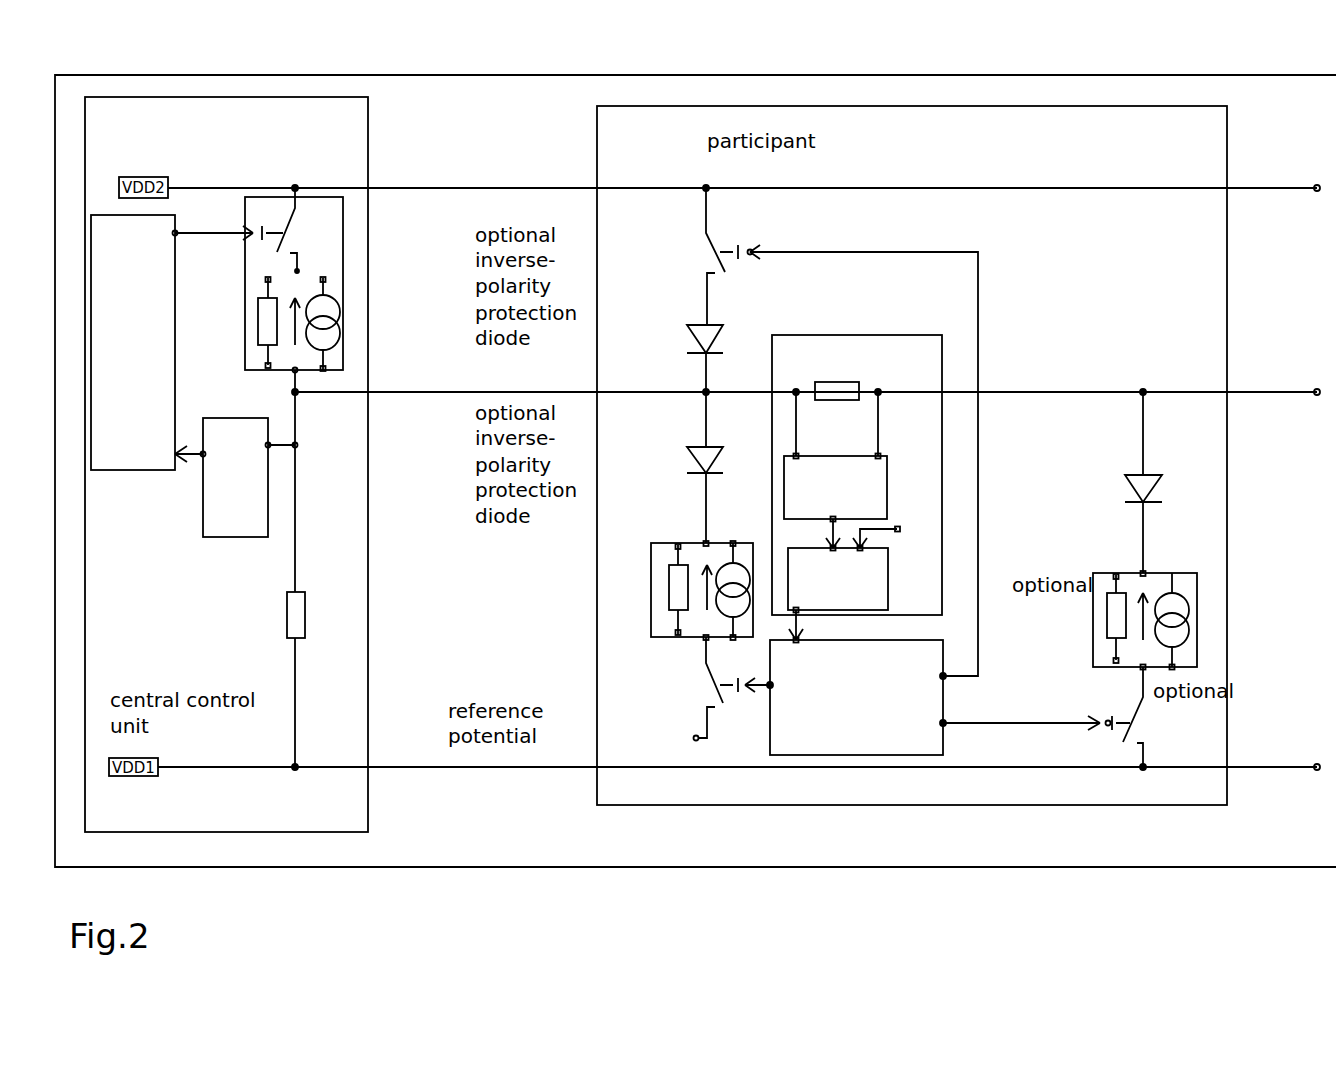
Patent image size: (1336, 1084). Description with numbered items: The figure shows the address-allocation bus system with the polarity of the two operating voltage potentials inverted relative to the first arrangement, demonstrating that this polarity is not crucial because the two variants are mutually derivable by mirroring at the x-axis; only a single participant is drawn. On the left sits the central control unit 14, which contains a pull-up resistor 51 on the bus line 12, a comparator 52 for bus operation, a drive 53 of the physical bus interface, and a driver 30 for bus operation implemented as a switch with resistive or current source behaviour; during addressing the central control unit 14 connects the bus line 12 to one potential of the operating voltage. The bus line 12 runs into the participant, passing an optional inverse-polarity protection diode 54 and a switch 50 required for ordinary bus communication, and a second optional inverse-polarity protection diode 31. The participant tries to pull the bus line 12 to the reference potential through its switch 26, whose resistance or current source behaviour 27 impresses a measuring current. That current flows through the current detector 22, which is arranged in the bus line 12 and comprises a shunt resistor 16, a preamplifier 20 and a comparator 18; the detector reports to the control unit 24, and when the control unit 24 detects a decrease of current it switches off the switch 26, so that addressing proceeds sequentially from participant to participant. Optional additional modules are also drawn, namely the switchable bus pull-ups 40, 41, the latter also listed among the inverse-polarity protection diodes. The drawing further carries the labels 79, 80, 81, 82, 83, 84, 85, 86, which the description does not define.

The bus line 12 is at (806, 416).
The central control unit 14 is at (693, 471).
The shunt resistor 16 is at (837, 398).
The comparator 18 is at (838, 579).
The preamplifier 20 is at (835, 487).
The current detector 22 is at (857, 489).
The control unit 24 is at (858, 697).
The switch for impressing a measuring current 26 is at (557, 710).
The current source behaviour of switch 27 is at (677, 590).
The driver for BUS operation 30 is at (271, 290).
The inverse-polarity protection diode 31 is at (649, 467).
The switchable BUS pull-up 40 is at (1072, 717).
The switchable BUS pull-up 41 is at (1117, 568).
The switch required for bus communication 50 is at (842, 433).
The pull-up resistor 51 is at (274, 579).
The comparator for BUS operation 52 is at (236, 477).
The drive of the physical BUS interface 53 is at (187, 342).
The inverse-polarity protection diode 54 is at (649, 337).
The diode 79 is at (1137, 482).
The current I_ 80 is at (685, 440).
The current I_ 81 is at (685, 320).
The current I_ 82 is at (670, 589).
The current I_ 83 is at (259, 322).
The current I_ 84 is at (817, 411).
The current I_ 85 is at (1108, 618).
The current I_ 86 is at (305, 616).